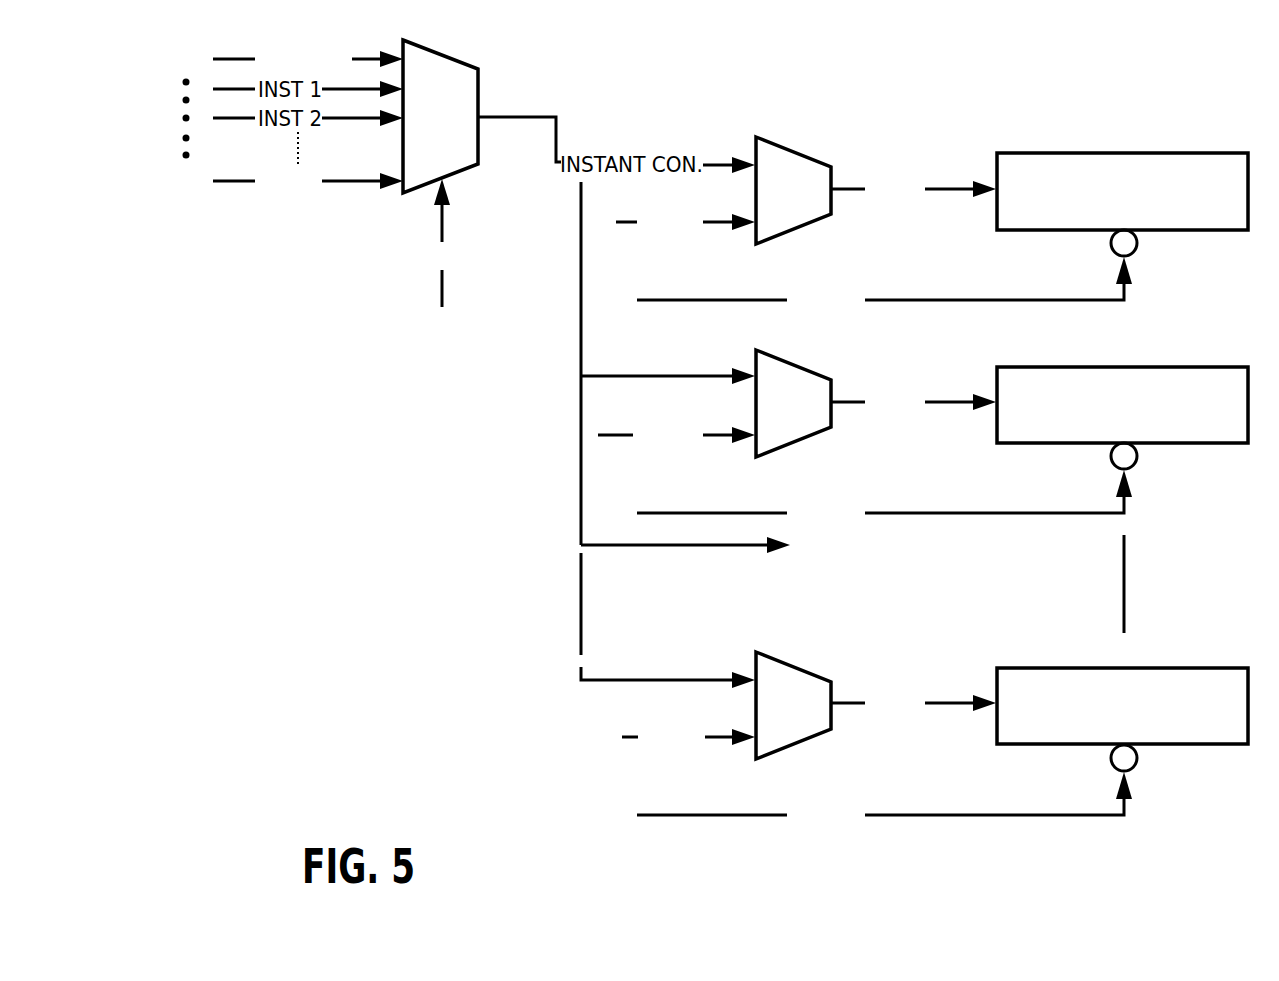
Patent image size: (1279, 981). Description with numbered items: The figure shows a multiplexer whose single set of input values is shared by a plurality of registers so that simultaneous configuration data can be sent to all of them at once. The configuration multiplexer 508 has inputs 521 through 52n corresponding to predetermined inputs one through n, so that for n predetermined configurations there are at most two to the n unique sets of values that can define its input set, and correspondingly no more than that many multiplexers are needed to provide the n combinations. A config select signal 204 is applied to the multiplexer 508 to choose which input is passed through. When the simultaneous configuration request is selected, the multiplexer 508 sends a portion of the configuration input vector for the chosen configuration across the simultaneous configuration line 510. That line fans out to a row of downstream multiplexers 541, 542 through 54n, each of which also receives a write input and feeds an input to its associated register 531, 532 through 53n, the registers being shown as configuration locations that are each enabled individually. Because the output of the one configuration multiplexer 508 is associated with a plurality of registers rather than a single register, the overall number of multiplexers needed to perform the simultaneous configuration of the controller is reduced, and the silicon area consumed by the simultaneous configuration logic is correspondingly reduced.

The multiplexer 508 is at (448, 50).
The simultaneous configuration line 510 is at (558, 128).
The input 521 is at (288, 59).
The input 52n is at (288, 181).
The config select signal 204 is at (442, 261).
The multiplexer 541 is at (795, 150).
The multiplexer 542 is at (795, 363).
The multiplexer 54n is at (795, 663).
The register 531 is at (1203, 158).
The register 532 is at (1202, 370).
The register 53n is at (1202, 671).